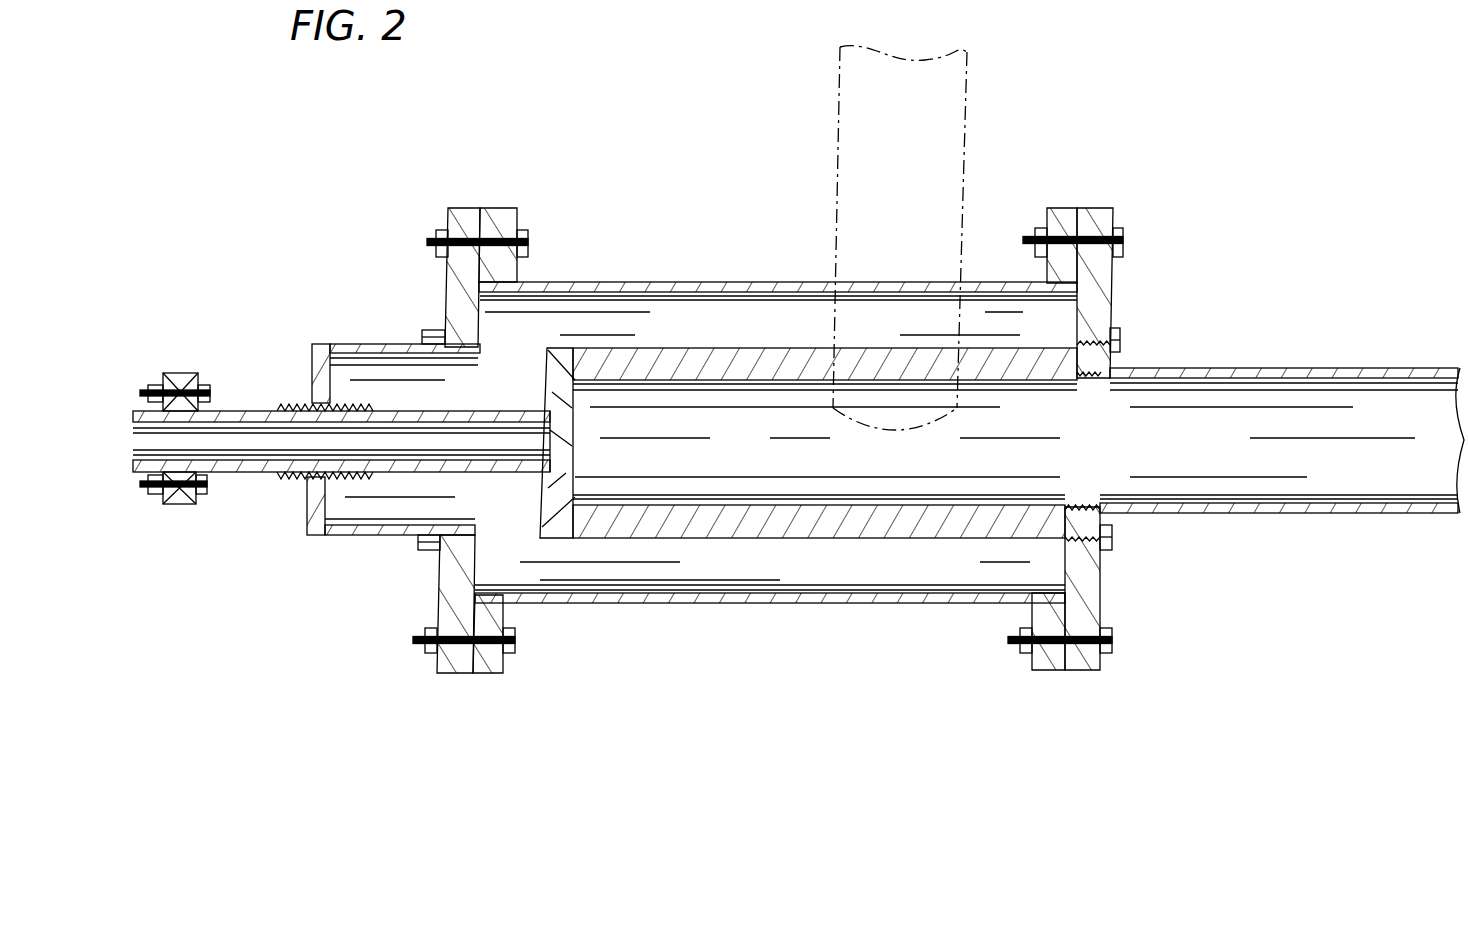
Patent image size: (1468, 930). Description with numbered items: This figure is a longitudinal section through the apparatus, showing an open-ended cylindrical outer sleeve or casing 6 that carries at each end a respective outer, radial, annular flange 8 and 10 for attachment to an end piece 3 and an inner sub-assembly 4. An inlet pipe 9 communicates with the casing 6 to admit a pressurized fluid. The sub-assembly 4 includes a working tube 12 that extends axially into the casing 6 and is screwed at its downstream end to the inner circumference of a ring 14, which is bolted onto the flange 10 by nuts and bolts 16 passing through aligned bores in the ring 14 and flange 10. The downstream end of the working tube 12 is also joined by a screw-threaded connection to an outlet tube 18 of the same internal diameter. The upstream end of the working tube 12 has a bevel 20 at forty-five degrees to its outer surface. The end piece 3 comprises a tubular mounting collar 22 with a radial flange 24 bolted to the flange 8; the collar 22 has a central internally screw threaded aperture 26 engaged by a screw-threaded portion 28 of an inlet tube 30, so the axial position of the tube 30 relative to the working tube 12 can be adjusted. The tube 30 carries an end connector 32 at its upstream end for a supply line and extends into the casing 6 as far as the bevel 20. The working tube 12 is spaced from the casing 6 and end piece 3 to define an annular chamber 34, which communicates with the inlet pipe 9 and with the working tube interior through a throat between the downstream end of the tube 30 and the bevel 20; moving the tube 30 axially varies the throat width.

The end piece 3 is at (392, 296).
The inner sub-assembly 4 is at (1160, 535).
The outer sleeve or casing 6 is at (653, 282).
The outer radial annular flange 8 is at (487, 672).
The inlet pipe 9 is at (840, 155).
The outer radial annular flange 10 is at (1060, 207).
The working tube 12 is at (747, 537).
The ring 14 is at (1100, 663).
The nuts and bolts 16 is at (1123, 240).
The outlet tube 18 is at (1370, 513).
The bevel 20 is at (550, 383).
The tubular mounting collar 22 is at (358, 535).
The radial flange 24 is at (443, 672).
The internally screw threaded aperture 26 is at (308, 400).
The screw-threaded portion 28 is at (293, 403).
The inlet tube 30 is at (247, 465).
The end connector 32 is at (178, 373).
The annular chamber 34 is at (730, 342).